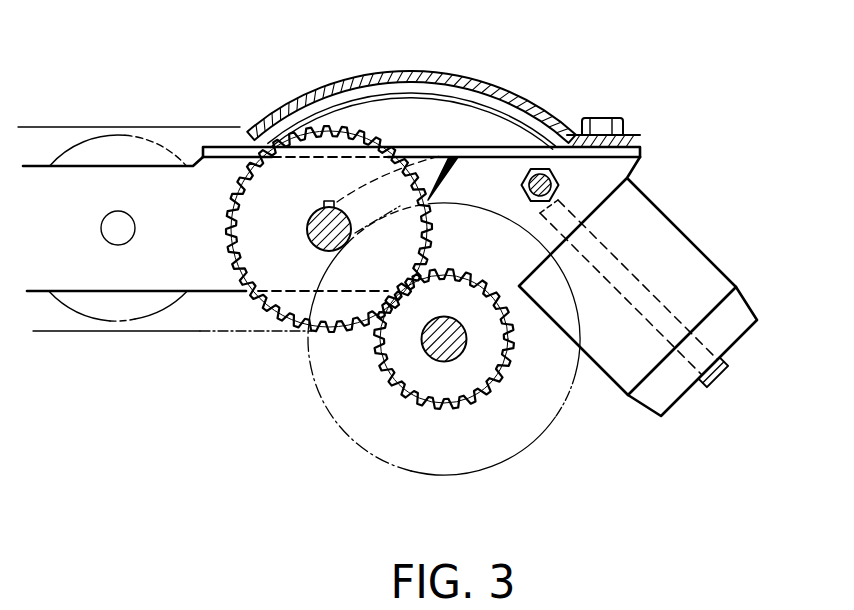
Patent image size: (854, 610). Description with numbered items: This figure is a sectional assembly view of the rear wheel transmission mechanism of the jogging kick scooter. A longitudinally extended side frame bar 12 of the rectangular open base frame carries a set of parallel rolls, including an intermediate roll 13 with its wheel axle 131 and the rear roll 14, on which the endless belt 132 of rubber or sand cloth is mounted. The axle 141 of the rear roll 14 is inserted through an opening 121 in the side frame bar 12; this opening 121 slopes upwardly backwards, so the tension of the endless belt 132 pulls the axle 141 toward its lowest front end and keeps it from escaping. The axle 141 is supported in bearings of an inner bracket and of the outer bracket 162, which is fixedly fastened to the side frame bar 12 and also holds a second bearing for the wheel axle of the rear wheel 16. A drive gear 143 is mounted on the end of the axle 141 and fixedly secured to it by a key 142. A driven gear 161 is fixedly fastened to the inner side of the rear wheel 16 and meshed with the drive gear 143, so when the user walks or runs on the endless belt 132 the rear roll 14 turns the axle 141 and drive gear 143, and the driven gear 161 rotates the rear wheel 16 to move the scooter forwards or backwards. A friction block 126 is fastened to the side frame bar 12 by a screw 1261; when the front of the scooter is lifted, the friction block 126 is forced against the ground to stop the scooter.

The side frame bar 12 is at (72, 272).
The opening 121 is at (432, 198).
The friction block 126 is at (688, 250).
The screw 1261 is at (716, 386).
The intermediate roll 13 is at (117, 134).
The wheel axle 131 is at (125, 240).
The endless belt 132 is at (50, 127).
The rear roll 14 is at (260, 118).
The axle 141 is at (311, 246).
The key 142 is at (336, 205).
The drive gear 143 is at (322, 170).
The rear wheel 16 is at (557, 402).
The driven gear 161 is at (462, 382).
The outer bracket 162 is at (630, 133).